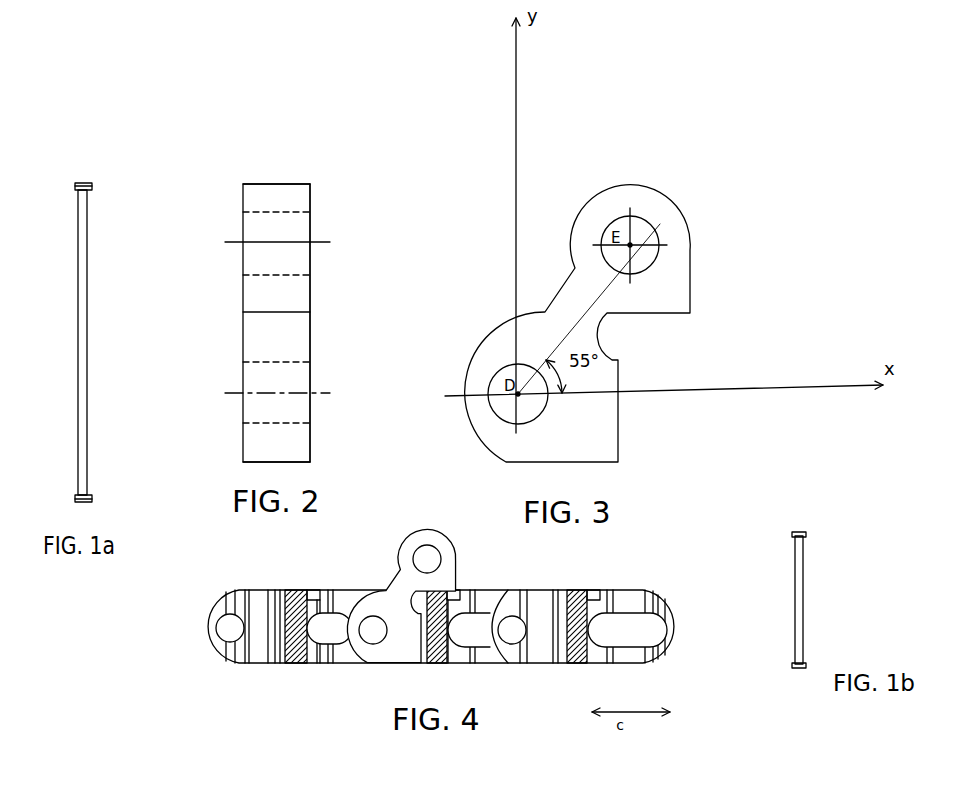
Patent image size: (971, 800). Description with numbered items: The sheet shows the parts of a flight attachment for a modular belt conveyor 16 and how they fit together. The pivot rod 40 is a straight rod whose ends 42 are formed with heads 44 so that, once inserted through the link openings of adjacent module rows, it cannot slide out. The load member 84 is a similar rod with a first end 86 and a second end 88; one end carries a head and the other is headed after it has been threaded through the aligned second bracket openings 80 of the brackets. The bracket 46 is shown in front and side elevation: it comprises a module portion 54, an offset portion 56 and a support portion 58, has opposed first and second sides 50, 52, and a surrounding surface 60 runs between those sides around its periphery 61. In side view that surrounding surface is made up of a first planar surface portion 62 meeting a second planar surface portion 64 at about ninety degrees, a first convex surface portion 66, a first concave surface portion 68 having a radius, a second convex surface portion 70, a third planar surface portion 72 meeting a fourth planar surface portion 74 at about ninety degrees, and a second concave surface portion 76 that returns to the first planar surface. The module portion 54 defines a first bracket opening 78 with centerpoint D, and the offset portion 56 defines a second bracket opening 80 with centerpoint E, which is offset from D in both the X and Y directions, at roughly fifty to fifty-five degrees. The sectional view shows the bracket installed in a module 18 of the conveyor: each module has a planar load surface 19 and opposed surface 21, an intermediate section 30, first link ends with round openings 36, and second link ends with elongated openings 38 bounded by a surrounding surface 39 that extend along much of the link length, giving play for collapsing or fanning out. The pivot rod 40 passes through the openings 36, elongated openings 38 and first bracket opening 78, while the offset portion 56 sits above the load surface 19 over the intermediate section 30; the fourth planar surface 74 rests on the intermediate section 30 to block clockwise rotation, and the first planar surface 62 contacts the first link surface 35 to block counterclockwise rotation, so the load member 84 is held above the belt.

In FIG. 4, the modular belt conveyor 16 is at (667, 565).
In FIG. 4, the module 18 is at (220, 605).
In FIG. 4, the load surface 19 is at (270, 590).
In FIG. 4, the opposed surface 21 is at (290, 663).
In FIG. 4, the intermediate section 30 is at (297, 590).
In FIG. 4, the first link surface 35 is at (428, 664).
In FIG. 4, the opening 36 is at (228, 632).
In FIG. 4, the elongated opening 38 is at (328, 636).
In FIG. 4, the surrounding surface 39 is at (310, 643).
In FIG. 1A, the pivot rod 40 is at (88, 278).
In FIG. 1A, the end 42 is at (91, 184).
In FIG. 1A, the head 44 is at (77, 188).
In FIG. 2, the bracket 46 is at (280, 172).
In FIG. 3, the bracket 46 is at (646, 182).
In FIG. 4, the bracket 46 is at (444, 519).
In FIG. 2, the first side 50 is at (242, 280).
In FIG. 3, the first side 50 is at (587, 280).
In FIG. 4, the first side 50 is at (410, 540).
In FIG. 2, the second side 52 is at (314, 276).
In FIG. 2, the module portion 54 is at (248, 436).
In FIG. 3, the module portion 54 is at (497, 348).
In FIG. 4, the module portion 54 is at (384, 655).
In FIG. 2, the offset portion 56 is at (253, 330).
In FIG. 3, the offset portion 56 is at (577, 310).
In FIG. 4, the offset portion 56 is at (397, 585).
In FIG. 2, the support portion 58 is at (258, 198).
In FIG. 3, the support portion 58 is at (689, 228).
In FIG. 4, the support portion 58 is at (423, 535).
In FIG. 2, the surrounding surface 60 is at (302, 202).
In FIG. 2, the periphery 61 is at (297, 228).
In FIG. 3, the periphery 61 is at (473, 353).
In FIG. 3, the first planar surface portion 62 is at (620, 416).
In FIG. 3, the second planar surface portion 64 is at (562, 462).
In FIG. 3, the first convex surface portion 66 is at (466, 394).
In FIG. 3, the first concave surface portion 68 is at (567, 300).
In FIG. 3, the second convex surface portion 70 is at (612, 190).
In FIG. 3, the third planar surface portion 72 is at (690, 245).
In FIG. 3, the fourth planar surface portion 74 is at (660, 313).
In FIG. 4, the fourth planar surface portion 74 is at (438, 590).
In FIG. 3, the second concave surface portion 76 is at (600, 330).
In FIG. 2, the first bracket opening 78 is at (314, 375).
In FIG. 3, the first bracket opening 78 is at (510, 410).
In FIG. 4, the first bracket opening 78 is at (363, 630).
In FIG. 2, the second bracket opening 80 is at (240, 221).
In FIG. 3, the second bracket opening 80 is at (675, 213).
In FIG. 4, the second bracket opening 80 is at (429, 545).
In FIG. 1B, the load member 84 is at (803, 580).
In FIG. 1B, the first end 86 is at (804, 535).
In FIG. 1B, the second end 88 is at (800, 668).